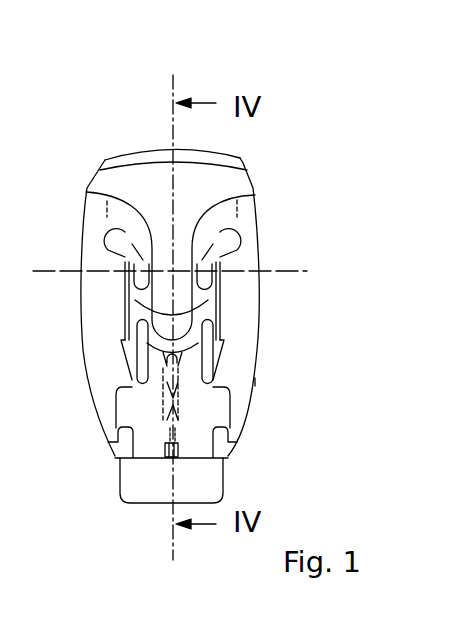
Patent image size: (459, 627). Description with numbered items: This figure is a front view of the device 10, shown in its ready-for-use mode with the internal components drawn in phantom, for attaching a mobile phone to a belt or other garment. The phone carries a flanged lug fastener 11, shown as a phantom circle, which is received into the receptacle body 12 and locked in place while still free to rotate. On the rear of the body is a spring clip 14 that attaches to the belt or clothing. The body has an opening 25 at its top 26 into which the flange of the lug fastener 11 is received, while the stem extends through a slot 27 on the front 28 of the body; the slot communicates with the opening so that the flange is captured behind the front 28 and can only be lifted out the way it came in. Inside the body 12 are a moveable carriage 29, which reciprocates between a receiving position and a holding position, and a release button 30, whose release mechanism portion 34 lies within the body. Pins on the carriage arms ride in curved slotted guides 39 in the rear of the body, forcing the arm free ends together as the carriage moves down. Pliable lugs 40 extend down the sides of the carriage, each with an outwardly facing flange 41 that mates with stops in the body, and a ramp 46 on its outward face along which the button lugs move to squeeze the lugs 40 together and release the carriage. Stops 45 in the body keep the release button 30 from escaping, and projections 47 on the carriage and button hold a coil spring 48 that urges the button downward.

The device 10 is at (301, 78).
The flanged lug fastener 11 is at (200, 298).
The receptacle body 12 is at (256, 386).
The spring clip 14 is at (105, 158).
The opening 25 is at (208, 182).
The top 26 is at (145, 152).
The slot 27 is at (192, 256).
The front 28 is at (90, 366).
The moveable carriage 29 is at (125, 302).
The release button 30 is at (147, 505).
The release mechanism portion 34 is at (220, 430).
The slotted guide 39 is at (112, 250).
The lug 40 is at (222, 352).
The outwardly facing flange 41 is at (122, 339).
The stop 45 is at (117, 428).
The ramp 46 is at (120, 364).
The projection 47 is at (166, 447).
The coil spring 48 is at (188, 397).